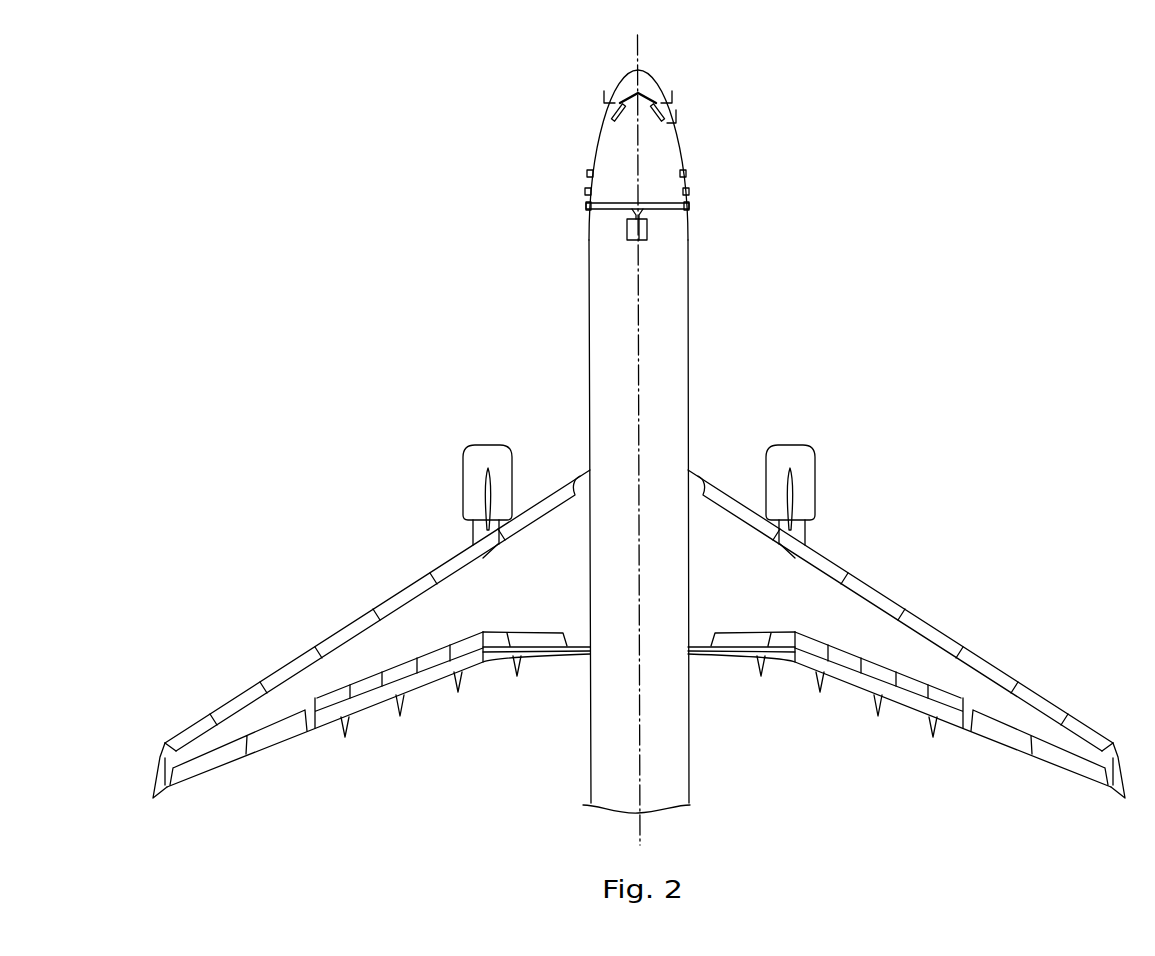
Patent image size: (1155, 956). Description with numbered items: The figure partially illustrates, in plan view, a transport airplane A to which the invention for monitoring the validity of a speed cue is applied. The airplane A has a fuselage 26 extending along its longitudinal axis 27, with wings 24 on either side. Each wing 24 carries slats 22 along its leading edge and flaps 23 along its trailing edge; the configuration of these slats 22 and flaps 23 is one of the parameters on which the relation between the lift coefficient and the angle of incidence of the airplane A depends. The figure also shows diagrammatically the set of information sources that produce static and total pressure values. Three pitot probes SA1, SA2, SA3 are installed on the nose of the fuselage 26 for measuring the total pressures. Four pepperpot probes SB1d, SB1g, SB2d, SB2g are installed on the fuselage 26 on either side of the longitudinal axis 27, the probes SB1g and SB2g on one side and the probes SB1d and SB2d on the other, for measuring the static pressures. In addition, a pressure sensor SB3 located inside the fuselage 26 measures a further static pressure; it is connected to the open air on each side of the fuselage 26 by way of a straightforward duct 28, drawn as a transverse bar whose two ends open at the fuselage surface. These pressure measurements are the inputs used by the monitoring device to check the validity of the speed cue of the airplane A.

The airplane A is at (589, 346).
The slats 22 is at (343, 613).
The flaps 23 is at (424, 670).
The wings 24 is at (450, 603).
The fuselage 26 is at (702, 348).
The longitudinal axis 27 is at (640, 832).
The duct 28 is at (603, 210).
The pitot probe SA1 is at (591, 90).
The pitot probe SA2 is at (685, 90).
The pitot probe SA3 is at (692, 122).
The pepperpot probe SB1g is at (589, 170).
The pepperpot probe SB2g is at (586, 191).
The pepperpot probe SB1d is at (687, 172).
The pepperpot probe SB2d is at (690, 192).
The pressure sensor SB3 is at (627, 233).